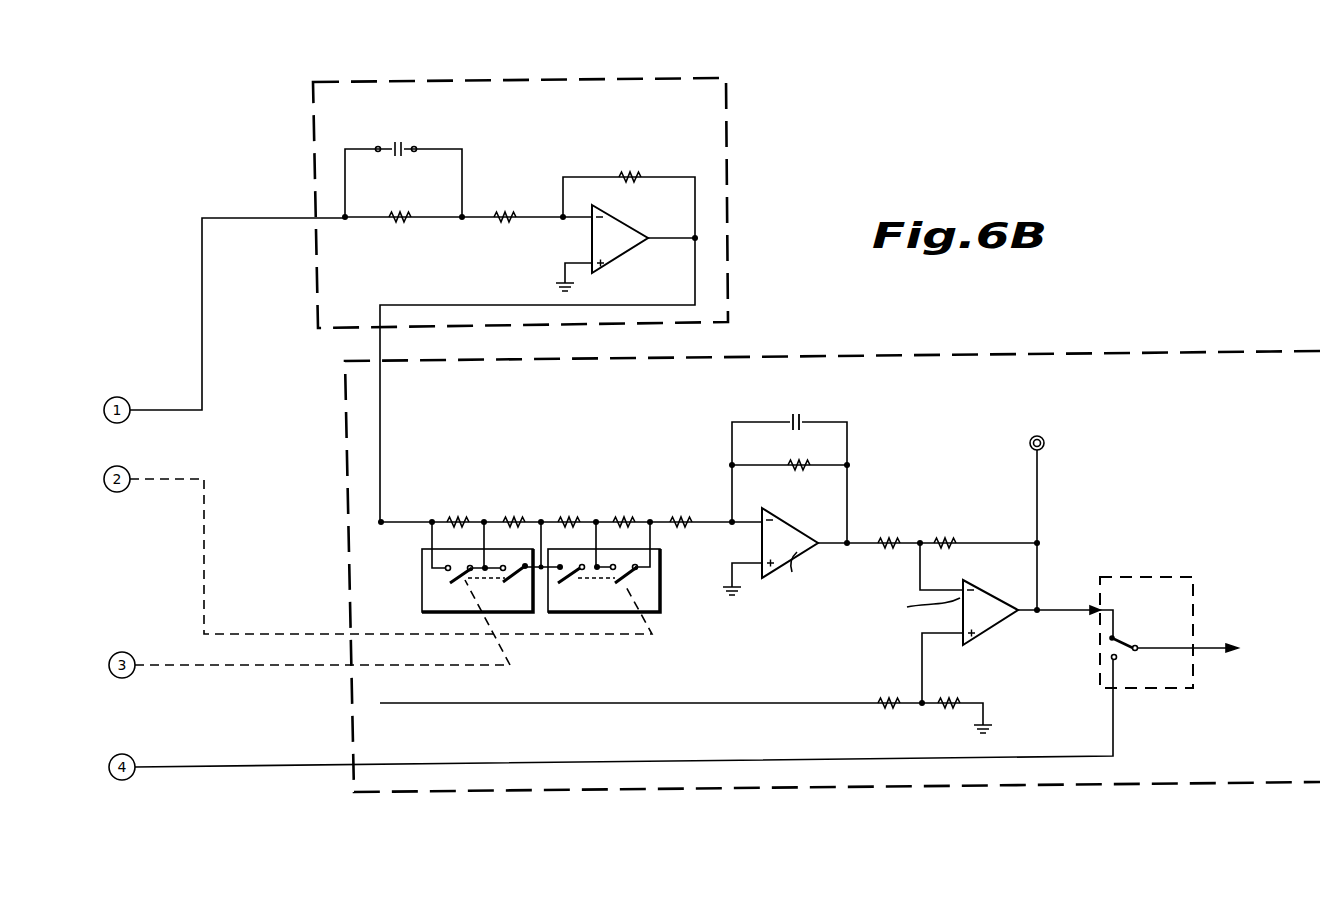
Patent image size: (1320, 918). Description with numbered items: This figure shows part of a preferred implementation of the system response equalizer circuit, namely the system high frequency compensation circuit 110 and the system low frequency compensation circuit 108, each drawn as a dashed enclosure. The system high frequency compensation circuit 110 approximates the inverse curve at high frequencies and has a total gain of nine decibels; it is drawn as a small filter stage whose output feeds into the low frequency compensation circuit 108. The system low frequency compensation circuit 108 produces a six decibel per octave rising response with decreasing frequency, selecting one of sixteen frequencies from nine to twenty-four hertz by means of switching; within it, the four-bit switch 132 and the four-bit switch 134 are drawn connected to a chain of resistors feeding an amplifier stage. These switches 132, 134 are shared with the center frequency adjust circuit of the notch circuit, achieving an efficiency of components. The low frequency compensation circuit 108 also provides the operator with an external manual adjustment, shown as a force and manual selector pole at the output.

The system low frequency compensation circuit 108 is at (832, 538).
The system high frequency compensation circuit 110 is at (727, 163).
The four-bit switch 132 is at (524, 612).
The four-bit switch 134 is at (610, 612).